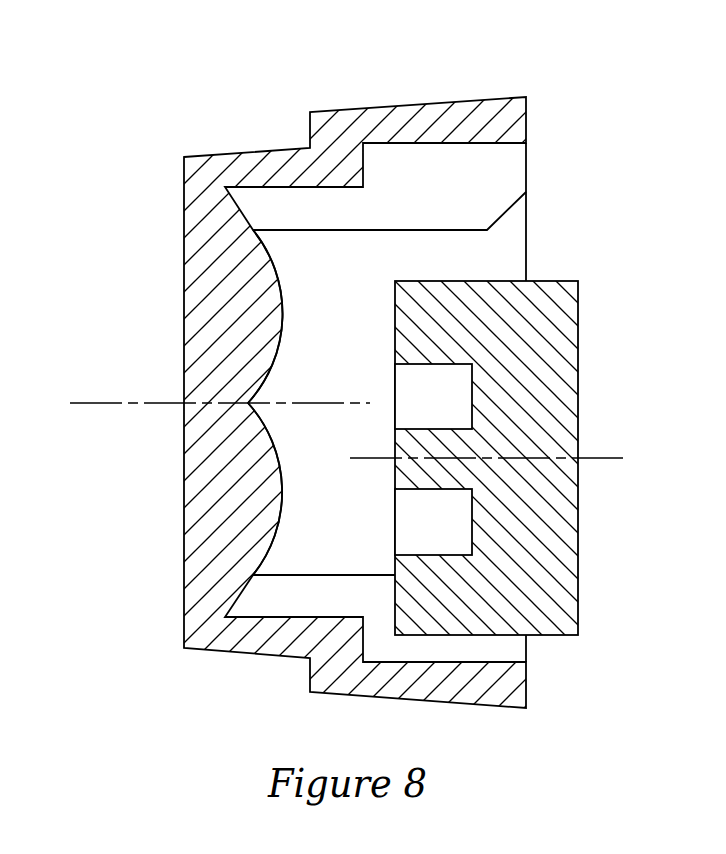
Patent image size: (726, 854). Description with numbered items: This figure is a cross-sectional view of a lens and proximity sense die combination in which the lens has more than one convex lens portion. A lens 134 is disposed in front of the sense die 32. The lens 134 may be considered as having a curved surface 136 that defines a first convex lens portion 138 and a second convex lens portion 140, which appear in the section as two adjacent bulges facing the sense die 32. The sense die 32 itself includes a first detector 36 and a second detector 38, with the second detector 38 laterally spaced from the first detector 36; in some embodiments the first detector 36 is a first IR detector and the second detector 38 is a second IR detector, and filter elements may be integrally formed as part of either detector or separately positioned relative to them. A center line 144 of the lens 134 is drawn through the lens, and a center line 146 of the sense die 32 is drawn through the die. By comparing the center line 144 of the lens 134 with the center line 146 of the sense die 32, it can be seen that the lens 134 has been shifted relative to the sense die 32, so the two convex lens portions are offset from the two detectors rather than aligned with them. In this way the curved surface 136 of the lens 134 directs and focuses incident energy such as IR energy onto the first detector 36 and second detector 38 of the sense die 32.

The lens 134 is at (300, 79).
The curved surface 136 is at (279, 265).
The first convex lens portion 138 is at (281, 330).
The second convex lens portion 140 is at (281, 518).
The center line of the lens 144 is at (103, 403).
The sense die 32 is at (565, 414).
The first detector 36 is at (472, 373).
The second detector 38 is at (472, 530).
The center line of the sense die 146 is at (600, 458).